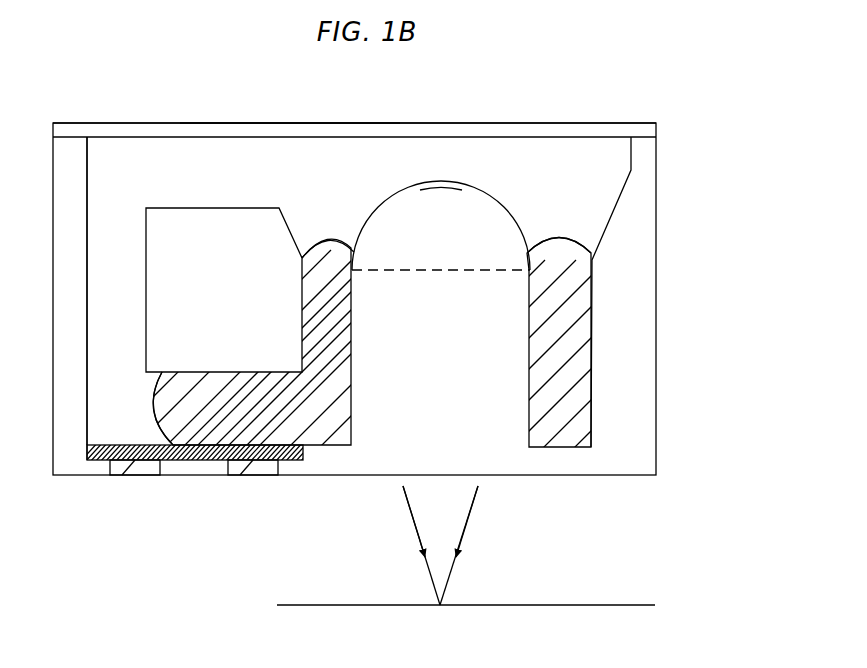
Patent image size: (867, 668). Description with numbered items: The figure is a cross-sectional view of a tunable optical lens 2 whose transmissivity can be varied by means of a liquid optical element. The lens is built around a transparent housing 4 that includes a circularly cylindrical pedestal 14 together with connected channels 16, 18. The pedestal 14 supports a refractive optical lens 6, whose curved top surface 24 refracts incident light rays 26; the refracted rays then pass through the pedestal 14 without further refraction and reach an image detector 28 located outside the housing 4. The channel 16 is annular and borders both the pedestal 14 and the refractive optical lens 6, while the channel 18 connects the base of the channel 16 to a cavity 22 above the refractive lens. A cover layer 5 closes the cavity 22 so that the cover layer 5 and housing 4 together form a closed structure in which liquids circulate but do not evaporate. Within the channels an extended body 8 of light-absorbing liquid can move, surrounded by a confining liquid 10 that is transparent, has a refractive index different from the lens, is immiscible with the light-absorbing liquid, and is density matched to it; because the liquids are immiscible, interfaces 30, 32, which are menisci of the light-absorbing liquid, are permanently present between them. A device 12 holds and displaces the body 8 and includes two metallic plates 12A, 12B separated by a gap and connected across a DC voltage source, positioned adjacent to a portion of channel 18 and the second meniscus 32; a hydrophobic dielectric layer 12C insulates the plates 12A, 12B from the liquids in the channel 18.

The optical lens 2 is at (692, 130).
The housing 4 is at (62, 329).
The cover layer 5 is at (265, 125).
The refractive optical lens 6 is at (433, 244).
The extended body of light-absorbing liquid 8 is at (237, 421).
The confining liquid 10 is at (212, 181).
The device for controlling the position of the liquid body 12 is at (200, 508).
The metallic plate 12A is at (128, 477).
The metallic plate 12B is at (258, 477).
The hydrophobic dielectric layer 12C is at (305, 455).
The circularly cylindrical pedestal 14 is at (436, 421).
The channel 16 is at (326, 224).
The channel 18 is at (102, 381).
The cavity 22 is at (177, 138).
The curved top surface 24 is at (441, 189).
The incident light rays 26 is at (478, 173).
The image detector 28 is at (580, 605).
The interface 30 is at (350, 243).
The second meniscus 32 is at (153, 397).